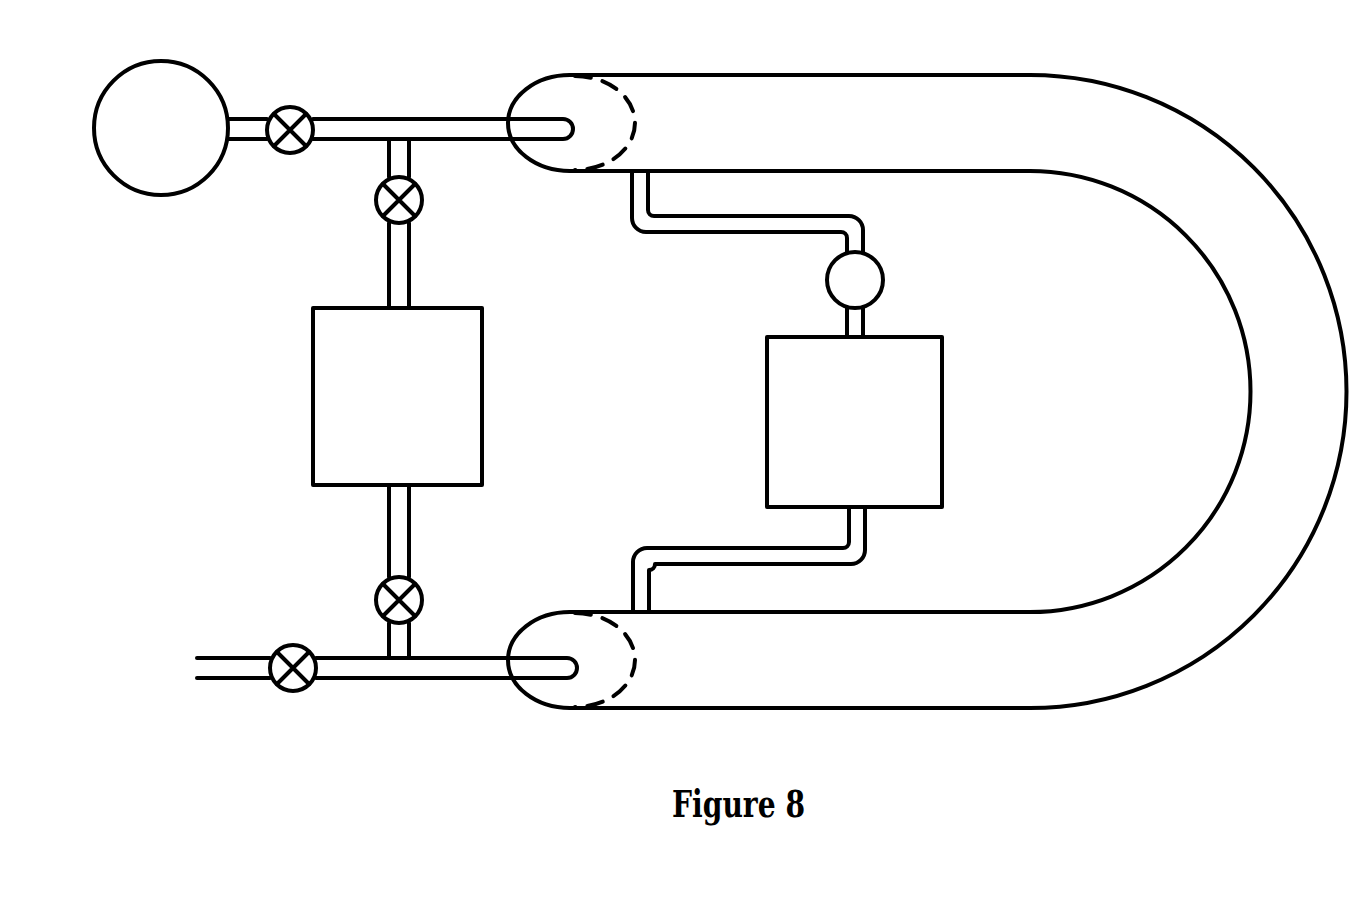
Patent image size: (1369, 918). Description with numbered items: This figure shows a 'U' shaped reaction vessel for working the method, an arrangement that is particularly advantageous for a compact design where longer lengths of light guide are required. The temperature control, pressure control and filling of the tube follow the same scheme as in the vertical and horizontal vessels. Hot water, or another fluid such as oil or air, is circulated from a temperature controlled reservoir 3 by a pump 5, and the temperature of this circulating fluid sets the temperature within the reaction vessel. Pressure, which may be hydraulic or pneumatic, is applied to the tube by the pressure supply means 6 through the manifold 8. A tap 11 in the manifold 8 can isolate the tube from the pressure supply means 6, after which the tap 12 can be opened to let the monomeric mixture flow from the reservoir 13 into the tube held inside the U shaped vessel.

The temperature controlled reservoir 3 is at (787, 460).
The pump 5 is at (757, 239).
The pressure supply means 6 is at (397, 400).
The manifold 8 is at (350, 120).
The tap 11 is at (418, 206).
The tap 12 is at (296, 108).
The reservoir 13 is at (161, 128).